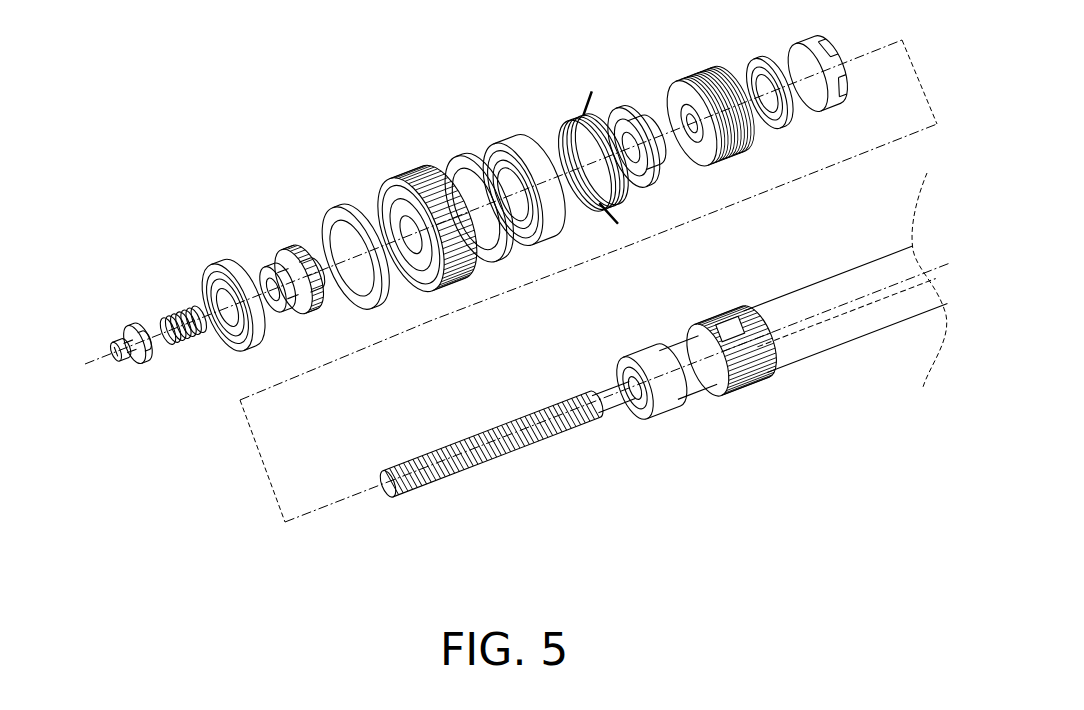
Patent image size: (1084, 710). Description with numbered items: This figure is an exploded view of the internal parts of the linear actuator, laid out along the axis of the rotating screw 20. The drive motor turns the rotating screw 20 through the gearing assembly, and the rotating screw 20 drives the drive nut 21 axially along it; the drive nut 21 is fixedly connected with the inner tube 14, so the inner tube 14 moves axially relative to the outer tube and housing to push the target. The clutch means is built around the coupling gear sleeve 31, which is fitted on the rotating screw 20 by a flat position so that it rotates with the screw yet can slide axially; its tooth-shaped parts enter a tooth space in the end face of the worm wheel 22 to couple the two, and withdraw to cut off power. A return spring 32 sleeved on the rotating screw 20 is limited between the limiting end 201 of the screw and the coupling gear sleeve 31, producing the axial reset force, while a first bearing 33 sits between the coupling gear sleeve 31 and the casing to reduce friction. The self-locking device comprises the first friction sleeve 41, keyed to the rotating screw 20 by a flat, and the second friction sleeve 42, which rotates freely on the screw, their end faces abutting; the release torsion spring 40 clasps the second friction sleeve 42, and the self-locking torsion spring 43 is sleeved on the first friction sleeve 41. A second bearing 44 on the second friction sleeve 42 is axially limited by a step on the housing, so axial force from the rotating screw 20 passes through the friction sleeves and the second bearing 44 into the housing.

The inner tube 14 is at (817, 340).
The rotating screw 20 is at (622, 417).
The drive nut 21 is at (660, 360).
The worm wheel 22 is at (388, 177).
The coupling gear sleeve 31 is at (297, 248).
The return spring 32 is at (187, 307).
The first bearing 33 is at (228, 258).
The release torsion spring 40 is at (642, 100).
The first friction sleeve 41 is at (683, 83).
The second friction sleeve 42 is at (572, 133).
The self-locking torsion spring 43 is at (712, 60).
The second bearing 44 is at (521, 140).
The limiting end 201 is at (128, 330).